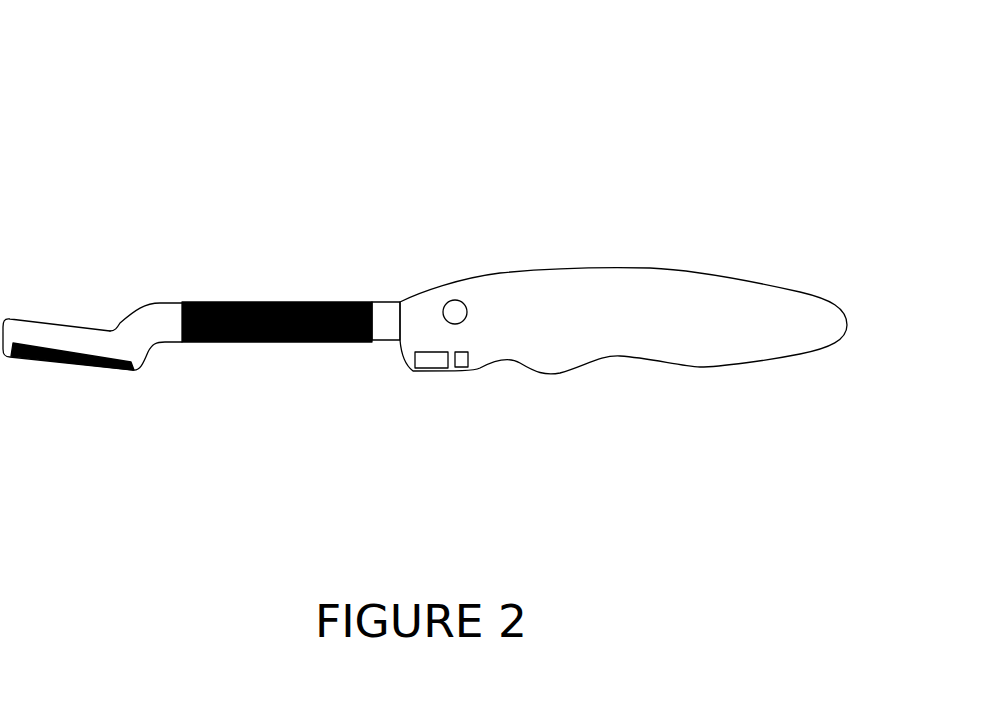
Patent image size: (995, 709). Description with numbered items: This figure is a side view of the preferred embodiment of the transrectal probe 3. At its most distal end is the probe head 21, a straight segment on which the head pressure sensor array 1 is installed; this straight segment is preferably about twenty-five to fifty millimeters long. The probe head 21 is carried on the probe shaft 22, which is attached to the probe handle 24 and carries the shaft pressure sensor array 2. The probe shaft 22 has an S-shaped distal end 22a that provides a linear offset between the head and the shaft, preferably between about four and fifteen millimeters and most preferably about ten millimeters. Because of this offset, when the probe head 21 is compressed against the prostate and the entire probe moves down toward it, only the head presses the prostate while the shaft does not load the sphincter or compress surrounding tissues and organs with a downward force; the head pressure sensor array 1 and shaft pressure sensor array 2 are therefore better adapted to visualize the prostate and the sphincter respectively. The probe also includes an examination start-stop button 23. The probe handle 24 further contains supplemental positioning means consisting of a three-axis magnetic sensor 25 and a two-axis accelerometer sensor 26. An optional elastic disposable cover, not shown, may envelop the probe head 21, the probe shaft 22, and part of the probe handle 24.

The transrectal probe 3 is at (108, 99).
The head pressure sensor array 1 is at (43, 362).
The probe head 21 is at (62, 338).
The S-shaped distal end 22a is at (152, 330).
The shaft pressure sensor array 2 is at (250, 343).
The probe shaft 22 is at (380, 312).
The examination start-stop button 23 is at (455, 305).
The probe handle 24 is at (593, 285).
The three-axis magnetic sensor 25 is at (420, 362).
The two-axis accelerometer sensor 26 is at (462, 362).